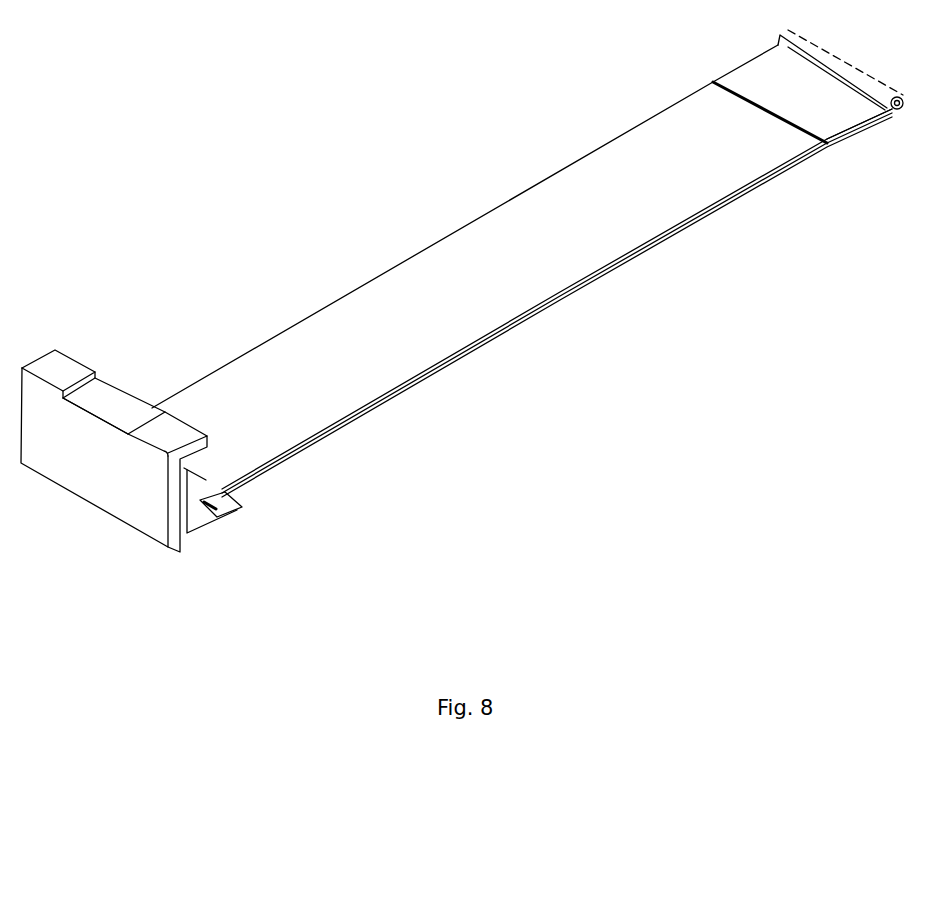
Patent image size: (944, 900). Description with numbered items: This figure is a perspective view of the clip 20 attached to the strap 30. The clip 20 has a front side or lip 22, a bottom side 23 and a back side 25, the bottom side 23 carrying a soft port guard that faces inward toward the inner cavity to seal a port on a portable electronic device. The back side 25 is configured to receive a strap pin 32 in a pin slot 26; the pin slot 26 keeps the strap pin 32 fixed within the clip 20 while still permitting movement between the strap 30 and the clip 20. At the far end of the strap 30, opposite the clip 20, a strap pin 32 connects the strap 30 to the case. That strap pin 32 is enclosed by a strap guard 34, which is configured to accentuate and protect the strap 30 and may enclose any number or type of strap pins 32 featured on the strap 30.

The clip 20 is at (127, 667).
The lip 22 is at (102, 397).
The bottom side 23 is at (95, 483).
The back side 25 is at (210, 520).
The pin slot 26 is at (213, 507).
The strap 30 is at (673, 195).
The strap pin 32 is at (793, 44).
The strap guard 34 is at (833, 115).